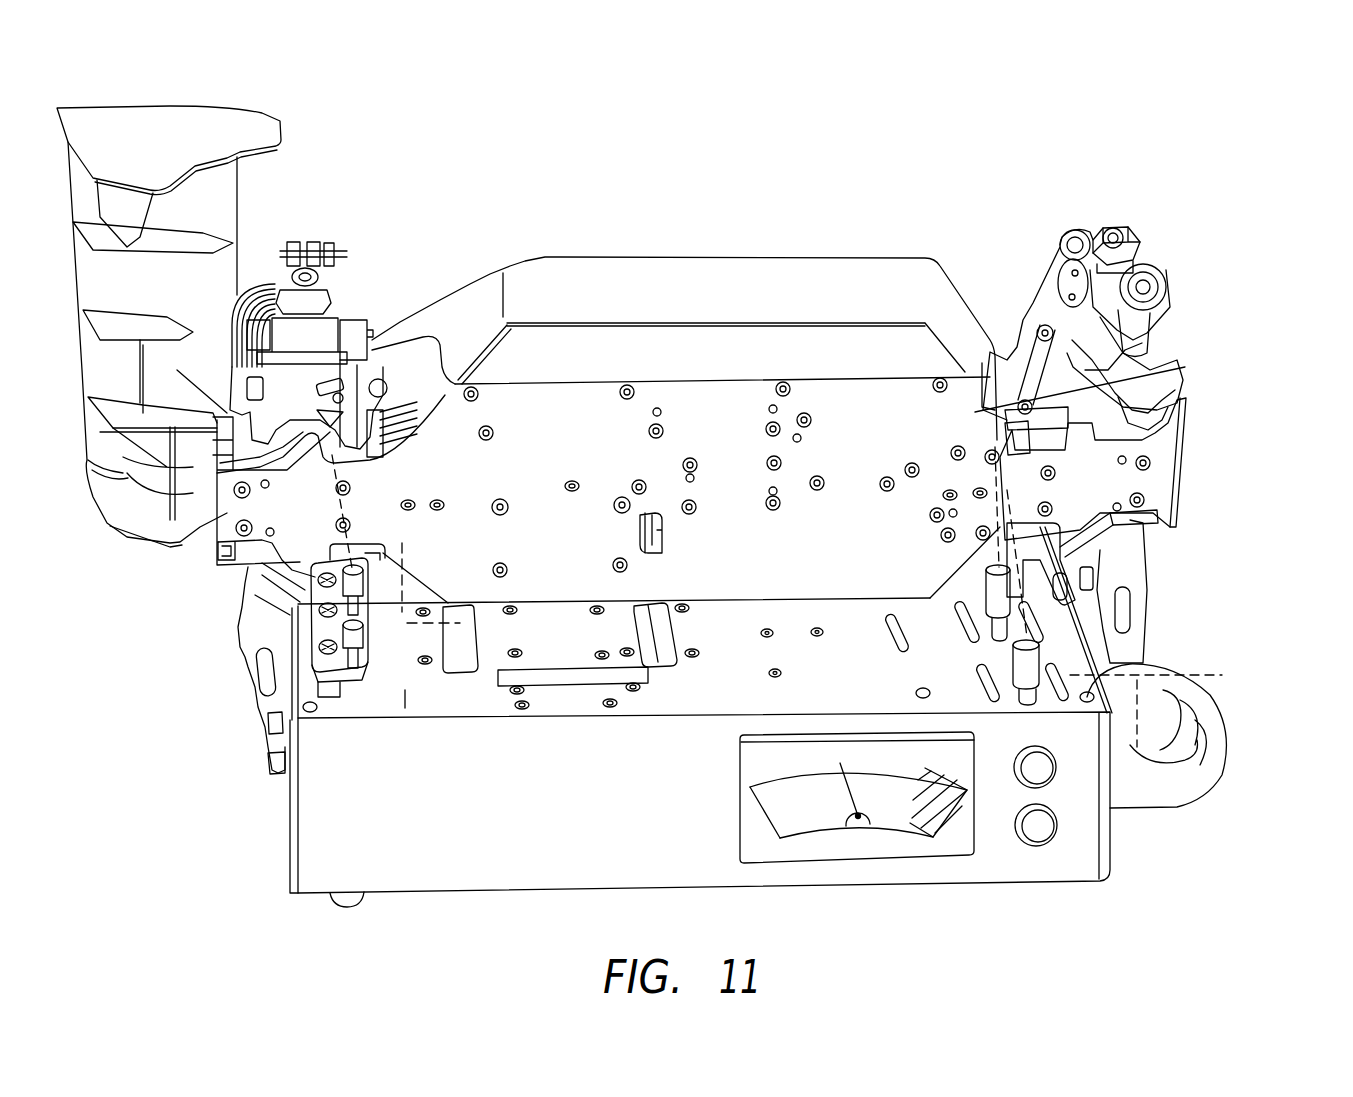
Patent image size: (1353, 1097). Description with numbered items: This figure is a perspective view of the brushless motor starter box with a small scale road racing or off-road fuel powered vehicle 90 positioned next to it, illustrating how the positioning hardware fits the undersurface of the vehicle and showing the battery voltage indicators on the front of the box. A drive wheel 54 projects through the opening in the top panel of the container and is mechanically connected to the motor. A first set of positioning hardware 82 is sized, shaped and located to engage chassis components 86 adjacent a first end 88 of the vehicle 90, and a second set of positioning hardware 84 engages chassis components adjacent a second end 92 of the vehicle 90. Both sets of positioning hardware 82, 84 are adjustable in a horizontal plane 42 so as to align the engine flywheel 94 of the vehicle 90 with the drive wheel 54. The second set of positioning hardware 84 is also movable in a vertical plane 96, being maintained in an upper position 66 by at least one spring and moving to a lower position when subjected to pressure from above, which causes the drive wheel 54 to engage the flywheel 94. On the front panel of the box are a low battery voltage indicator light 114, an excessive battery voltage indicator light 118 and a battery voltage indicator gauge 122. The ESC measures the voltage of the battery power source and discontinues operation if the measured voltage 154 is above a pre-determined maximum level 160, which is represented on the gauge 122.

The horizontal plane 42 is at (1223, 675).
The drive wheel 54 is at (667, 642).
The upper position 66 is at (327, 658).
The first set of positioning hardware 82 is at (1030, 657).
The second set of positioning hardware 84 is at (355, 637).
The chassis components 86 is at (1150, 384).
The first end 88 is at (1180, 468).
The small scale road racing or off-road fuel powered vehicle 90 is at (872, 285).
The second end 92 is at (225, 515).
The engine flywheel 94 is at (665, 525).
The vertical plane 96 is at (410, 693).
The low battery voltage indicator light 114 is at (1040, 768).
The excessive battery voltage indicator light 118 is at (1047, 830).
The battery voltage indicator gauge 122 is at (815, 802).
The measured voltage 154 is at (840, 777).
The pre-determined maximum level 160 is at (930, 767).